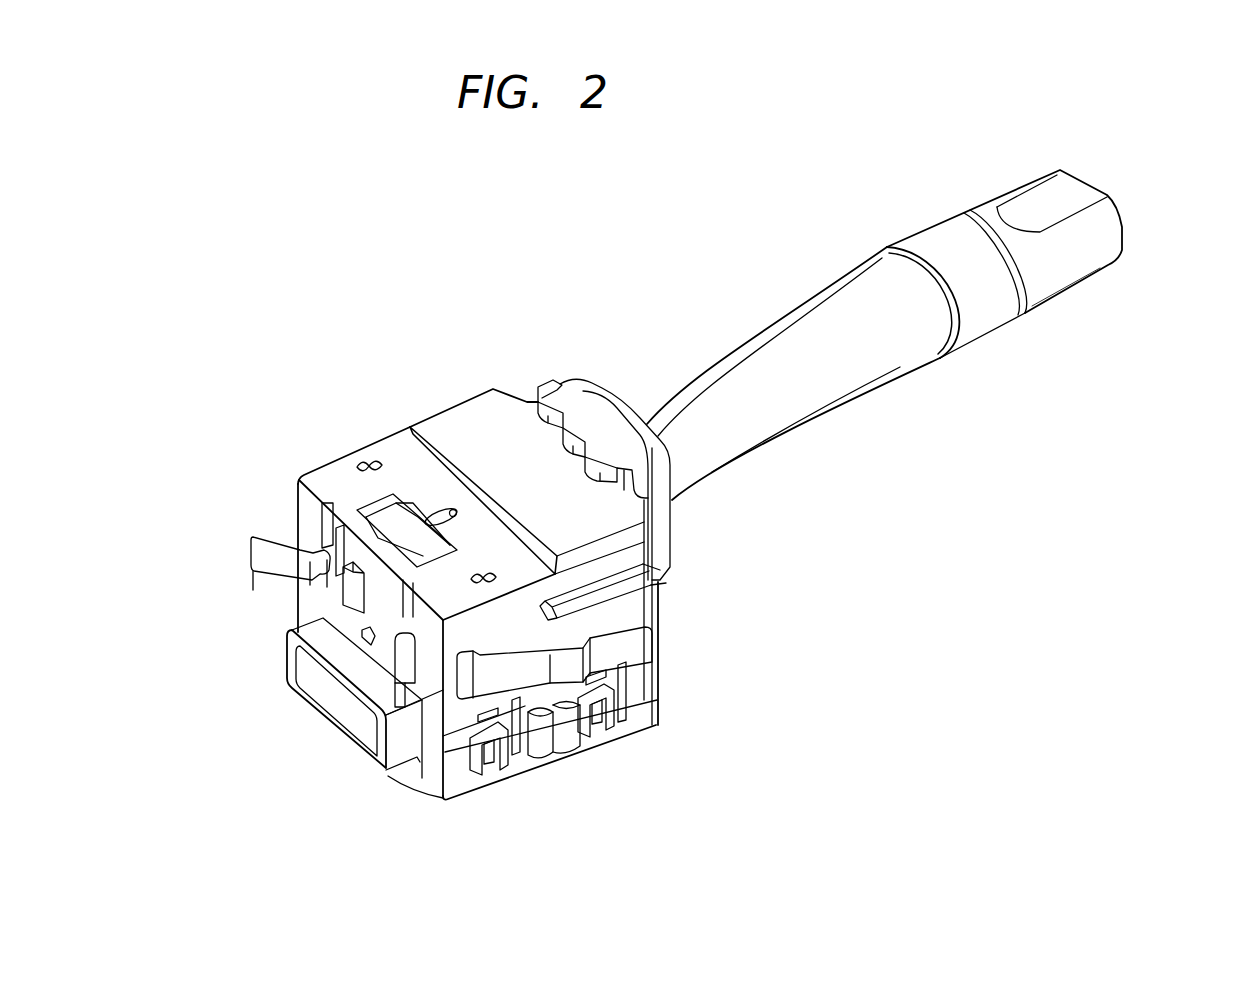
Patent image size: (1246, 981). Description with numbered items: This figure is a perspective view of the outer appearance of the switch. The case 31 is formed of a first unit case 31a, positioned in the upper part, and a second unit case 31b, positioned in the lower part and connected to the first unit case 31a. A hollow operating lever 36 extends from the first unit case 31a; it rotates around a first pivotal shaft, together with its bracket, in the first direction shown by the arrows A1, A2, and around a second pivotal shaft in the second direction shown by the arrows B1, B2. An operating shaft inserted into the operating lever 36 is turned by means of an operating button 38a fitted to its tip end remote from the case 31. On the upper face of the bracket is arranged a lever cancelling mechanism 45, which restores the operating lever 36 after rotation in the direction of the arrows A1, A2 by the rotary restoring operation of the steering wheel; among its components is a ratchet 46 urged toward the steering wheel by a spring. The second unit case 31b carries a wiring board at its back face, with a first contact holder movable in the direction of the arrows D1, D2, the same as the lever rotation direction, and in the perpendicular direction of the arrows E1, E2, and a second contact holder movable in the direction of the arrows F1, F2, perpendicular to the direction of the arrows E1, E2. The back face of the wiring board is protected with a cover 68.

The case 31 is at (330, 456).
The first unit case 31a is at (460, 410).
The second unit case 31b is at (390, 770).
The operating lever 36 is at (767, 330).
The operating button 38a is at (1117, 212).
The lever cancelling mechanism 45 is at (343, 543).
The ratchet 46 is at (352, 595).
The cover 68 is at (603, 752).
The arrow A1 is at (1033, 177).
The arrow A2 is at (1100, 262).
The arrow B1 is at (1063, 186).
The arrow B2 is at (1057, 205).
The arrow D1 is at (253, 765).
The arrow D2 is at (237, 747).
The arrow E1 is at (242, 753).
The arrow E2 is at (240, 754).
The arrow F1 is at (674, 678).
The arrow F2 is at (671, 676).